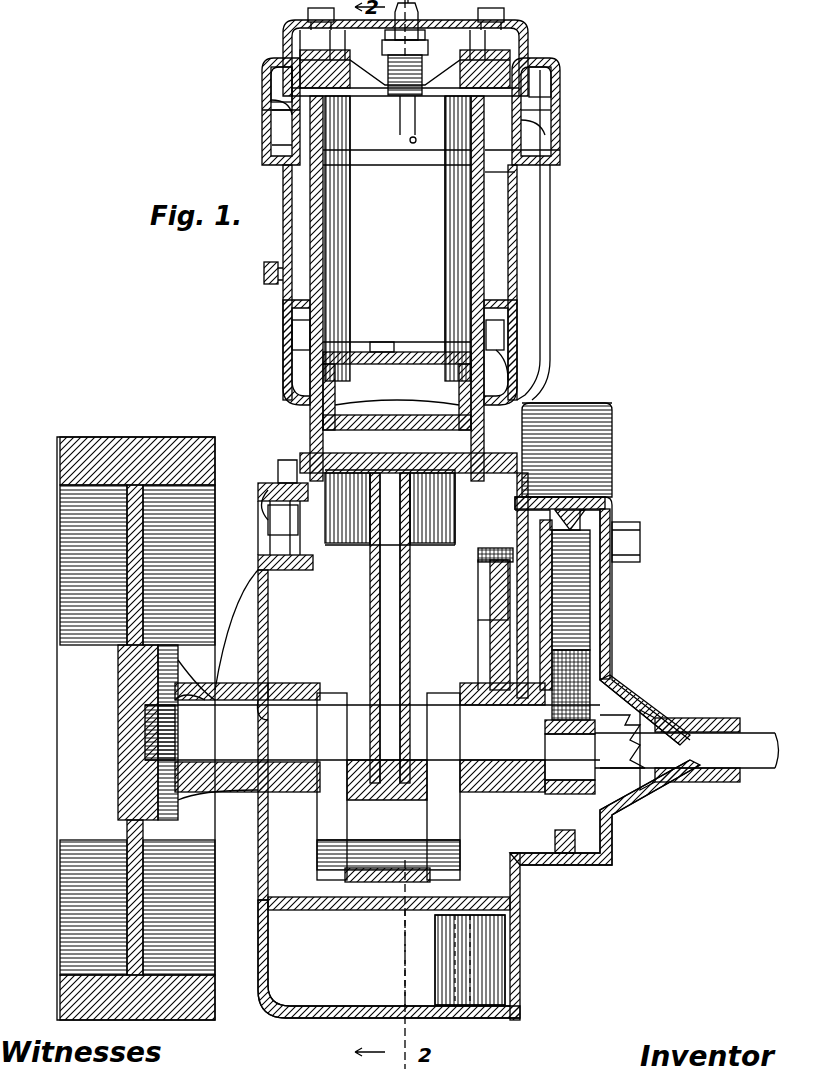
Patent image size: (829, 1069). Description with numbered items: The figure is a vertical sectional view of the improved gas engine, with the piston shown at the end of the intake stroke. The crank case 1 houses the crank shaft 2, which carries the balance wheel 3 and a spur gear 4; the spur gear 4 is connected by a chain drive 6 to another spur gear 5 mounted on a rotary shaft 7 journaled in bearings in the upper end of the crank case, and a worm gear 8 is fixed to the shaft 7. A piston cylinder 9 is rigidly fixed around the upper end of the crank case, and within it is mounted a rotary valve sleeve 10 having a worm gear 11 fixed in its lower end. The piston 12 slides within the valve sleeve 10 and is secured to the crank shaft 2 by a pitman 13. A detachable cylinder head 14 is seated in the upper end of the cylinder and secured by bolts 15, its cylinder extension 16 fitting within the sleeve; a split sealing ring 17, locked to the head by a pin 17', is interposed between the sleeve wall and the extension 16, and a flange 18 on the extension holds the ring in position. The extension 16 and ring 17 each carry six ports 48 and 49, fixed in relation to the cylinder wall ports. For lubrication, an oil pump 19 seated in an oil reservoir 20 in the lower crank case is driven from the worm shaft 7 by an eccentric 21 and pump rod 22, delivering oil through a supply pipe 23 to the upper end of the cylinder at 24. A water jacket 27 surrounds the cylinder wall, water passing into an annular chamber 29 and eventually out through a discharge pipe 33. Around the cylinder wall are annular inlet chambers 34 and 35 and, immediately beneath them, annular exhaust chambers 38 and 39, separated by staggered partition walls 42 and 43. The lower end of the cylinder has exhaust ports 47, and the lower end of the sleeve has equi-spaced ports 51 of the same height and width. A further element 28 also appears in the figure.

The crank case 1 is at (524, 862).
The crank shaft 2 is at (296, 698).
The balance wheel 3 is at (72, 713).
The spur gear 4 is at (590, 782).
The spur gear 5 is at (580, 530).
The chain drive 6 is at (583, 646).
The rotary shaft 7 is at (612, 540).
The worm gear 8 is at (372, 555).
The piston cylinder 9 is at (300, 462).
The rotary valve sleeve 10 is at (452, 236).
The worm gear 11 is at (555, 430).
The piston 12 is at (310, 378).
The pitman 13 is at (410, 624).
The cylinder head 14 is at (470, 45).
The bolts 15 is at (428, 20).
The cylinder extension 16 is at (500, 122).
The split sealing ring 17 is at (560, 149).
The pin 17' is at (415, 154).
The flange 18 is at (505, 170).
The oil pump 19 is at (475, 952).
The oil reservoir 20 is at (389, 959).
The eccentric 21 is at (570, 500).
The pump rod 22 is at (482, 585).
The supply pipe 23 is at (546, 290).
The upper end of the cylinder 24 is at (528, 55).
The water jacket 27 is at (300, 186).
The drain cock 28 is at (272, 266).
The annular chamber 29 is at (298, 72).
The delivery or discharge pipe 33 is at (420, 32).
The annular inlet chamber 34 is at (500, 100).
The annular inlet chamber 35 is at (500, 332).
The annular exhaust chamber 38 is at (530, 140).
The annular exhaust chamber 39 is at (502, 372).
The staggered partition wall 42 is at (280, 100).
The staggered partition wall 43 is at (292, 335).
The exhaust ports 47 is at (455, 345).
The ports 48 is at (420, 125).
The ports 49 is at (300, 98).
The ports 51 is at (382, 344).